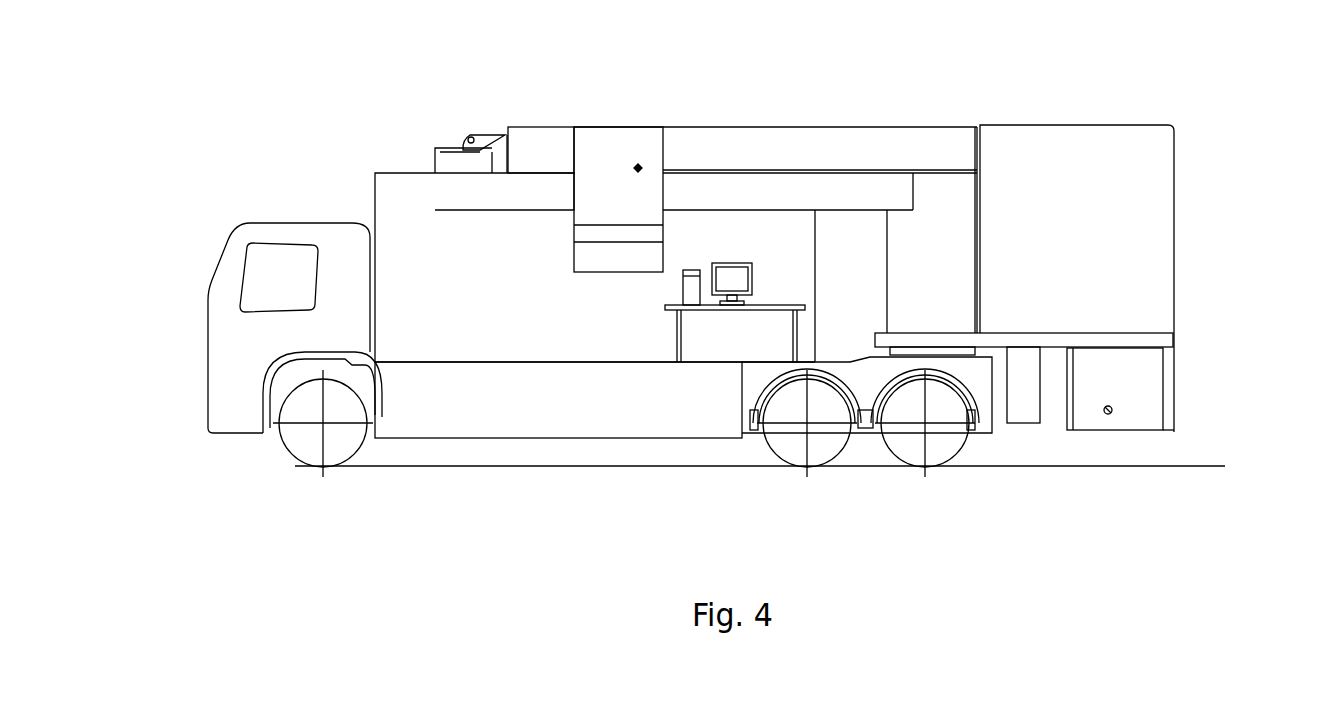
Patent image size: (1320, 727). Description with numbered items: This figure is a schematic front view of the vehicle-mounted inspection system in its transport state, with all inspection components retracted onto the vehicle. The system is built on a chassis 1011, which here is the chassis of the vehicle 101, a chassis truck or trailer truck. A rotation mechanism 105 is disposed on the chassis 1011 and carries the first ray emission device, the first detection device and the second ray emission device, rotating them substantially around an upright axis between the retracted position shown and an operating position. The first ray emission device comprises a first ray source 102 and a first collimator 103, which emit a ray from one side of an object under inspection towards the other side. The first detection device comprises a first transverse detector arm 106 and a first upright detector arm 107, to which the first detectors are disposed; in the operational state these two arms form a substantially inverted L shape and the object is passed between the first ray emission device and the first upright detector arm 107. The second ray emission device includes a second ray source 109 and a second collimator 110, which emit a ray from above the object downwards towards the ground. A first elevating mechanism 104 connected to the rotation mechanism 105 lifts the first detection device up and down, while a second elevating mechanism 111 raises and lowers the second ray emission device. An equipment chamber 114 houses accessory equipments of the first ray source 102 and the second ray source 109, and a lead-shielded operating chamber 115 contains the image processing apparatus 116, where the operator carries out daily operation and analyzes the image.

The vehicle 101 is at (243, 383).
The first ray source 102 is at (1137, 397).
The first collimator 103 is at (1025, 377).
The first elevating mechanism 104 is at (955, 228).
The rotation mechanism 105 is at (915, 340).
The first transverse detector arm 106 is at (543, 152).
The first upright detector arm 107 is at (472, 188).
The second ray source 109 is at (628, 152).
The second collimator 110 is at (647, 253).
The second elevating mechanism 111 is at (852, 245).
The equipment chamber 114 is at (1113, 205).
The operating chamber 115 is at (415, 272).
The image processing apparatus 116 is at (700, 267).
The chassis 1011 is at (868, 363).